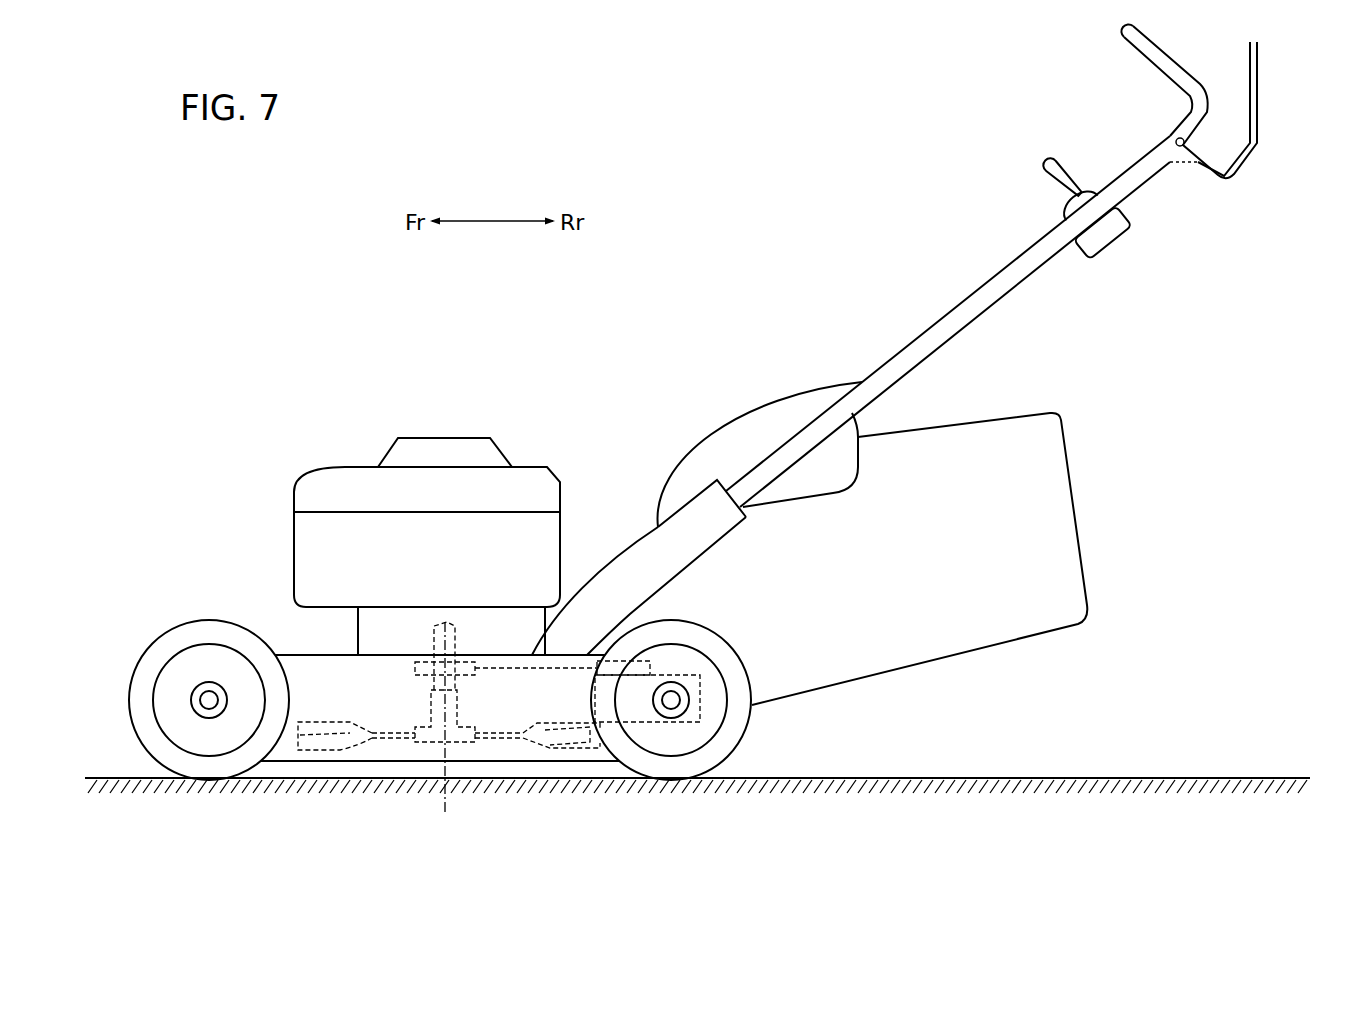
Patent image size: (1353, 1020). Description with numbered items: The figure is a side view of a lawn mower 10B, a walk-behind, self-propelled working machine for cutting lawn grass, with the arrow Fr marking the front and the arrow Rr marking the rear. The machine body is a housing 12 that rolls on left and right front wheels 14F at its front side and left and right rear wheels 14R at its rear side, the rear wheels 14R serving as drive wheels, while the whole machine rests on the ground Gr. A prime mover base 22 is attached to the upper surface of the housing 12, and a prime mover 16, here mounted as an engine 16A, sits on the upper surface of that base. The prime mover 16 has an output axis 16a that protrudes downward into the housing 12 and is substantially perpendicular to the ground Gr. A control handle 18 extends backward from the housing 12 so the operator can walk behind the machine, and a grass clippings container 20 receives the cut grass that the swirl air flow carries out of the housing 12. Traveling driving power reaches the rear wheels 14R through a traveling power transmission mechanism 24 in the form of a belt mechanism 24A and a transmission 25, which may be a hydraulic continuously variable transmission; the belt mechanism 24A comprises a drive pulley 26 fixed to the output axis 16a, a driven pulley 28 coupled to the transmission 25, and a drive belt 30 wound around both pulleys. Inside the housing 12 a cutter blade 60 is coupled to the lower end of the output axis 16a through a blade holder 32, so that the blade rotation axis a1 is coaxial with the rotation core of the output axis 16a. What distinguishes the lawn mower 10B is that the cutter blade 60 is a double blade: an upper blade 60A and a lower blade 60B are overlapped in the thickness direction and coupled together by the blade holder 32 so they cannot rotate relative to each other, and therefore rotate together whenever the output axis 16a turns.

The lawn mower 10B is at (320, 352).
The housing 12 is at (340, 651).
The front wheels 14F is at (143, 670).
The rear wheels 14R is at (737, 720).
The prime mover 16 is at (427, 488).
The engine 16A is at (423, 433).
The output axis 16a is at (455, 643).
The control handle 18 is at (967, 298).
The grass clippings container 20 is at (1058, 507).
The prime mover base 22 is at (370, 620).
The traveling power transmission mechanism 24 is at (434, 713).
The belt mechanism 24A is at (410, 736).
The transmission 25 is at (692, 672).
The drive pulley 26 is at (415, 666).
The driven pulley 28 is at (620, 660).
The drive belt 30 is at (512, 666).
The blade holder 32 is at (430, 705).
The cutter blade 60 is at (604, 785).
The upper blade 60A is at (570, 740).
The lower blade 60B is at (549, 756).
The blade rotation axis a1 is at (447, 732).
The ground Gr is at (1195, 777).